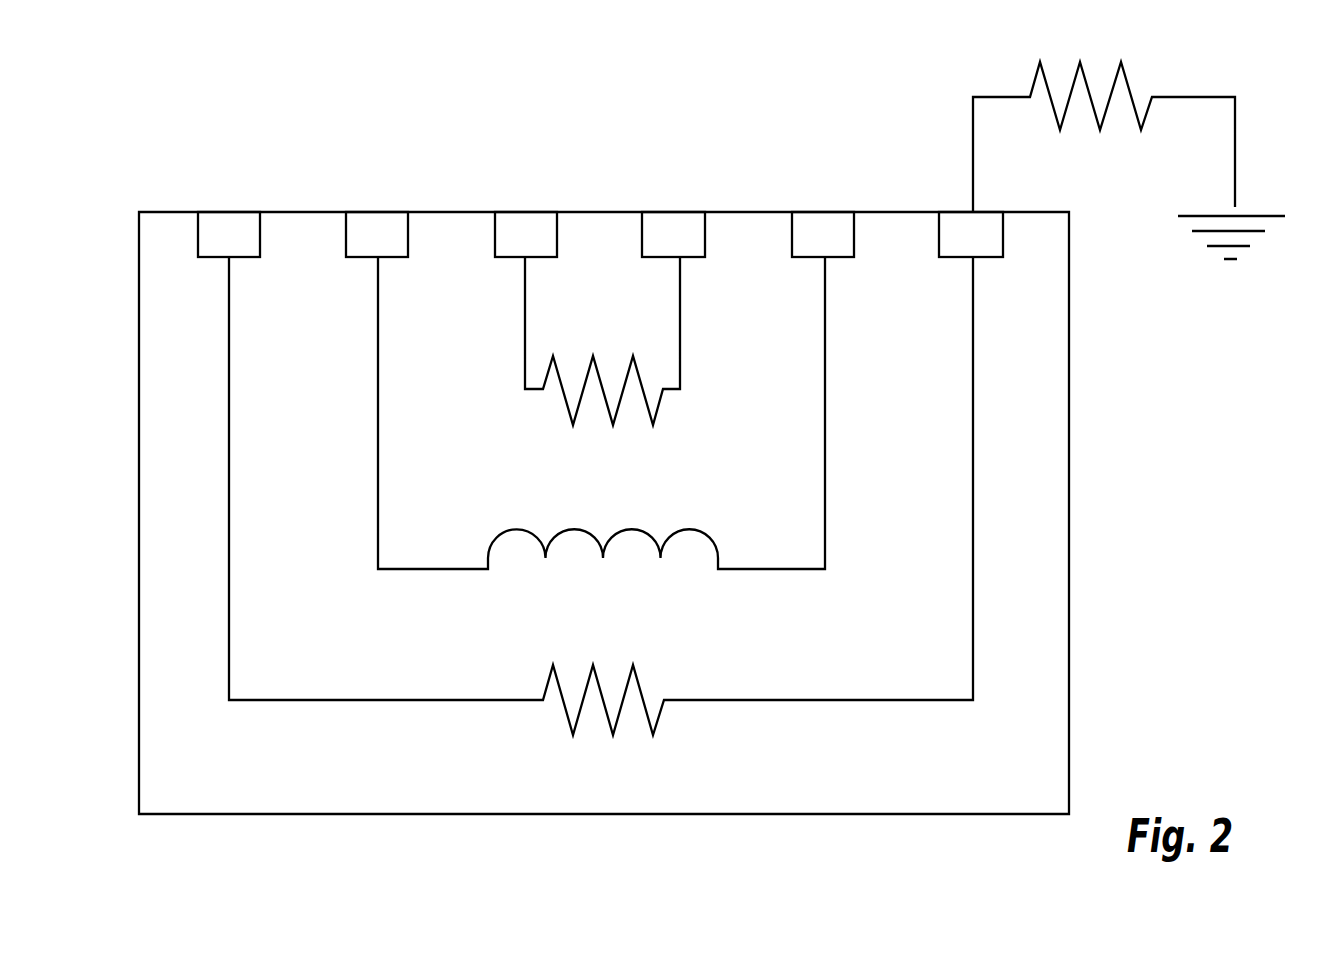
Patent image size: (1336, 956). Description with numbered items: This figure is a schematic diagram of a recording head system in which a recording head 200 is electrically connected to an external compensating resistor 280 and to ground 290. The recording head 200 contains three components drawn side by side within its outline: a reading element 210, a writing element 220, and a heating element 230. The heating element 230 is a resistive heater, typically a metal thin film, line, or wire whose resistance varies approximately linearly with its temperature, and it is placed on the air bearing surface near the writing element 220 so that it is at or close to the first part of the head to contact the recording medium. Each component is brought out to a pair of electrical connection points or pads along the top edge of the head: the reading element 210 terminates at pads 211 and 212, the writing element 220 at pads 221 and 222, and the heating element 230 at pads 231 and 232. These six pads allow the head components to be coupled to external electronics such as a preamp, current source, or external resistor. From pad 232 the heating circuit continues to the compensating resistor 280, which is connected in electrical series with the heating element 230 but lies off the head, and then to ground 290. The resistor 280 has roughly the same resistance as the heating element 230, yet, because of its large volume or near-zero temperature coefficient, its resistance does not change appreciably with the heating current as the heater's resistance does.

The recording head 200 is at (1069, 605).
The reading element 210 is at (658, 412).
The electrical connection point 211 is at (525, 224).
The electrical connection point 212 is at (670, 224).
The writing element 220 is at (708, 533).
The electrical connection point 221 is at (378, 224).
The electrical connection point 222 is at (817, 224).
The heating element 230 is at (638, 675).
The electrical connection point 231 is at (222, 224).
The electrical connection point 232 is at (957, 230).
The external compensating resistor 280 is at (1127, 78).
The ground 290 is at (1242, 216).